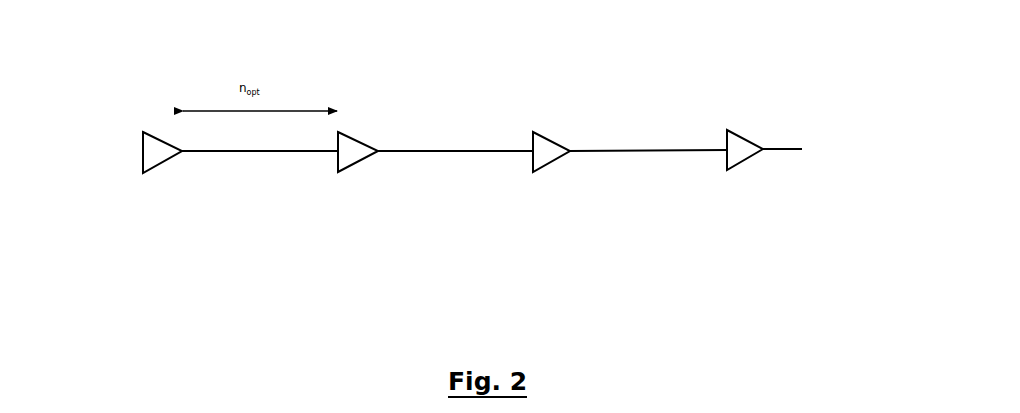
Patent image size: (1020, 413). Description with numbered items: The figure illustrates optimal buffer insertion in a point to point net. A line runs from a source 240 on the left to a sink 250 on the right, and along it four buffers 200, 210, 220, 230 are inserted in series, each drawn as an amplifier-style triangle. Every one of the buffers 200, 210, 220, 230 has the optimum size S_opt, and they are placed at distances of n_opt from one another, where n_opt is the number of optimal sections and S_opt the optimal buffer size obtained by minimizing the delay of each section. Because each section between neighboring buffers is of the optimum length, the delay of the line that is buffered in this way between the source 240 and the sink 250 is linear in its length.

The buffer 200 is at (143, 118).
The buffer 210 is at (379, 167).
The buffer 220 is at (573, 168).
The buffer 230 is at (718, 120).
The source 240 is at (90, 180).
The sink 250 is at (815, 186).